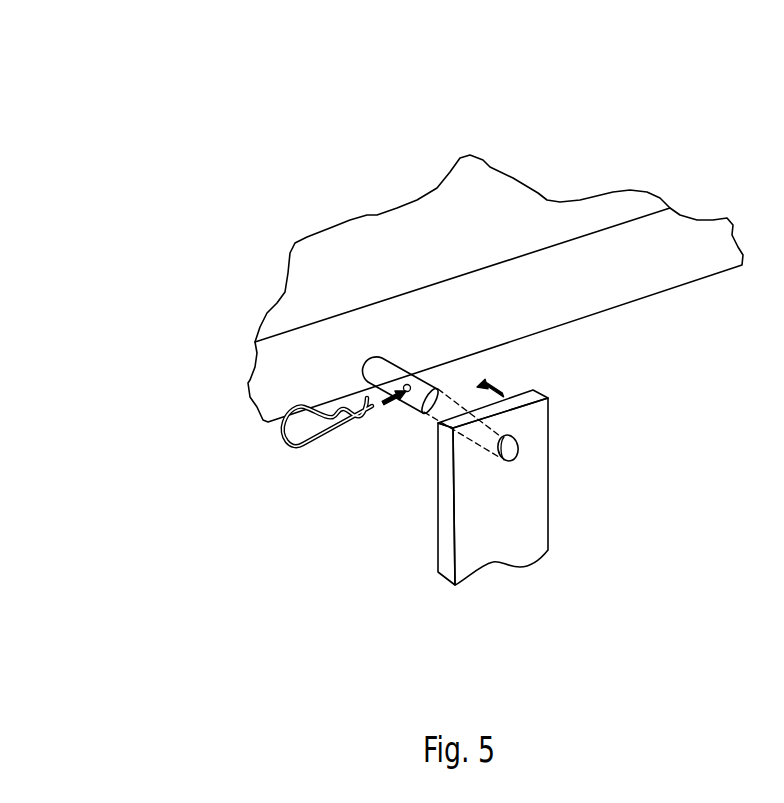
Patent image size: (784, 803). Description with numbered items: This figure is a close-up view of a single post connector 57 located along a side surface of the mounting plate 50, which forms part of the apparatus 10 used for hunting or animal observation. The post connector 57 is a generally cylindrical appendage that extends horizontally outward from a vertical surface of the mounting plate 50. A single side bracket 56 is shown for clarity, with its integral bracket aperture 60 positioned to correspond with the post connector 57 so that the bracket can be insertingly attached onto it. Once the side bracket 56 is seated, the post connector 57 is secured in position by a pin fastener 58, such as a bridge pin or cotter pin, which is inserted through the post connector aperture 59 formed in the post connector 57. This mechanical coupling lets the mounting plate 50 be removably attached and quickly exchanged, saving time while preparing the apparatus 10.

The apparatus 10 is at (180, 118).
The mounting plate 50 is at (580, 222).
The side bracket 56 is at (538, 507).
The post connector 57 is at (427, 413).
The pin fastener 58 is at (297, 447).
The post connector aperture 59 is at (406, 392).
The bracket aperture 60 is at (518, 442).